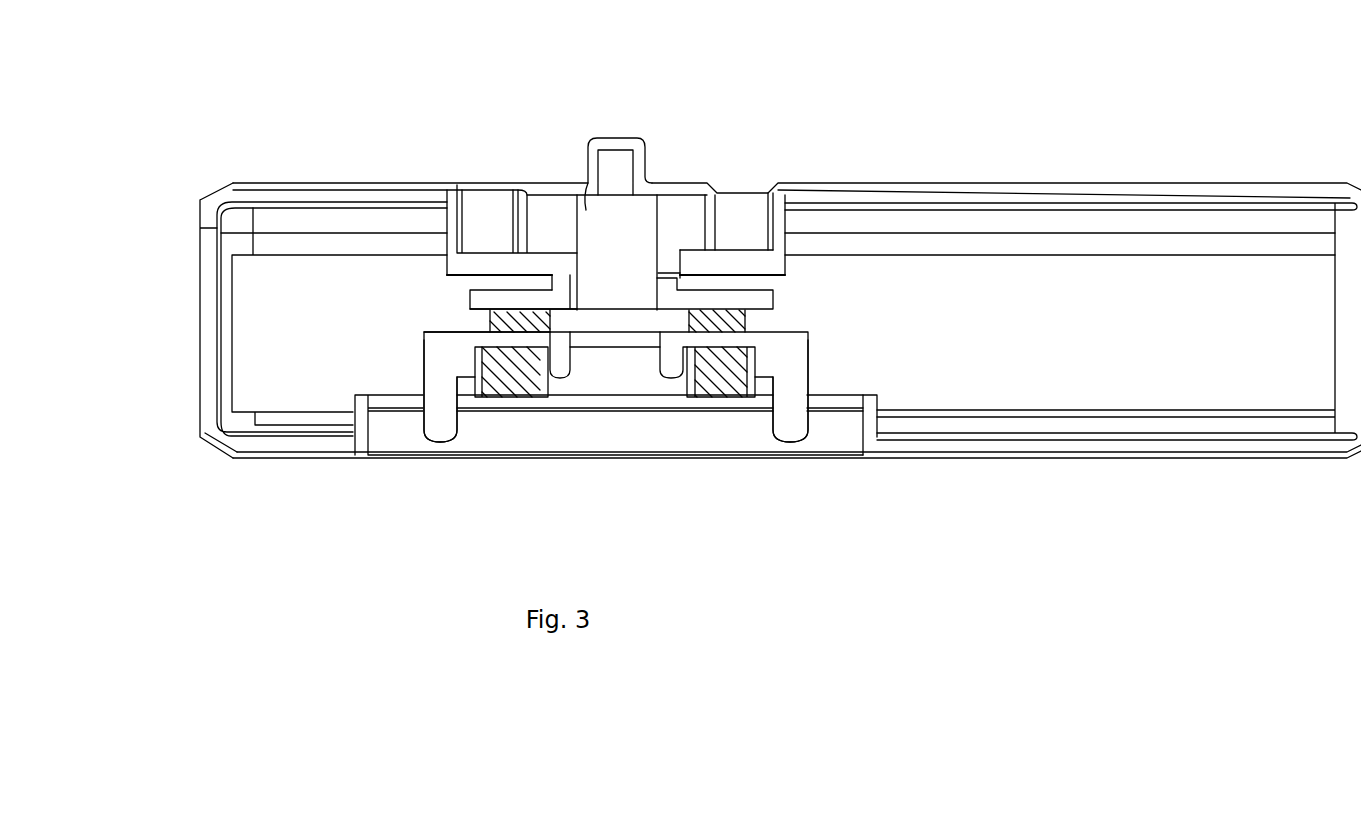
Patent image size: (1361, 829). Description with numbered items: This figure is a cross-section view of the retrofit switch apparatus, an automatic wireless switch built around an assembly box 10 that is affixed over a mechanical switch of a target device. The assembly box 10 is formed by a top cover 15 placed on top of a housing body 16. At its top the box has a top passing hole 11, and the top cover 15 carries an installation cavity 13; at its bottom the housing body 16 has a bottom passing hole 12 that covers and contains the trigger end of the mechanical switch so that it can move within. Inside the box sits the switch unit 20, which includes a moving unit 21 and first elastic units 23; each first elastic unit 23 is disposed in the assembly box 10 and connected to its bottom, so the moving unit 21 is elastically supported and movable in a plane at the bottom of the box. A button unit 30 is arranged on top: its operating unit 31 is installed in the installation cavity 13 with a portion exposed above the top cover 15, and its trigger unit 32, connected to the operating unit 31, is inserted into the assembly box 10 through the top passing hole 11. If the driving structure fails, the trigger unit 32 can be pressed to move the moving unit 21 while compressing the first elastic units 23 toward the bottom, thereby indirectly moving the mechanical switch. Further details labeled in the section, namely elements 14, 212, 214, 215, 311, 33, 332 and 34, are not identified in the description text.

The assembly box 10 is at (132, 148).
The top passing hole 11 is at (660, 258).
The bottom passing hole 12 is at (836, 402).
The installation cavity 13 is at (738, 217).
The bottom plate 14 is at (402, 432).
The top cover 15 is at (233, 188).
The housing body 16 is at (205, 288).
The switch unit 20 is at (388, 347).
The moving unit 21 is at (433, 352).
The support leg 212 is at (558, 378).
The connecting portion 214 is at (613, 343).
The foot 215 is at (442, 435).
The first elastic unit 23 is at (487, 393).
The button unit 30 is at (557, 37).
The operating unit 31 is at (614, 145).
The plug cavity 311 is at (694, 223).
The trigger unit 32 is at (587, 210).
The flange plate 33 is at (762, 300).
The flange ledge 332 is at (560, 285).
The seal 34 is at (510, 312).